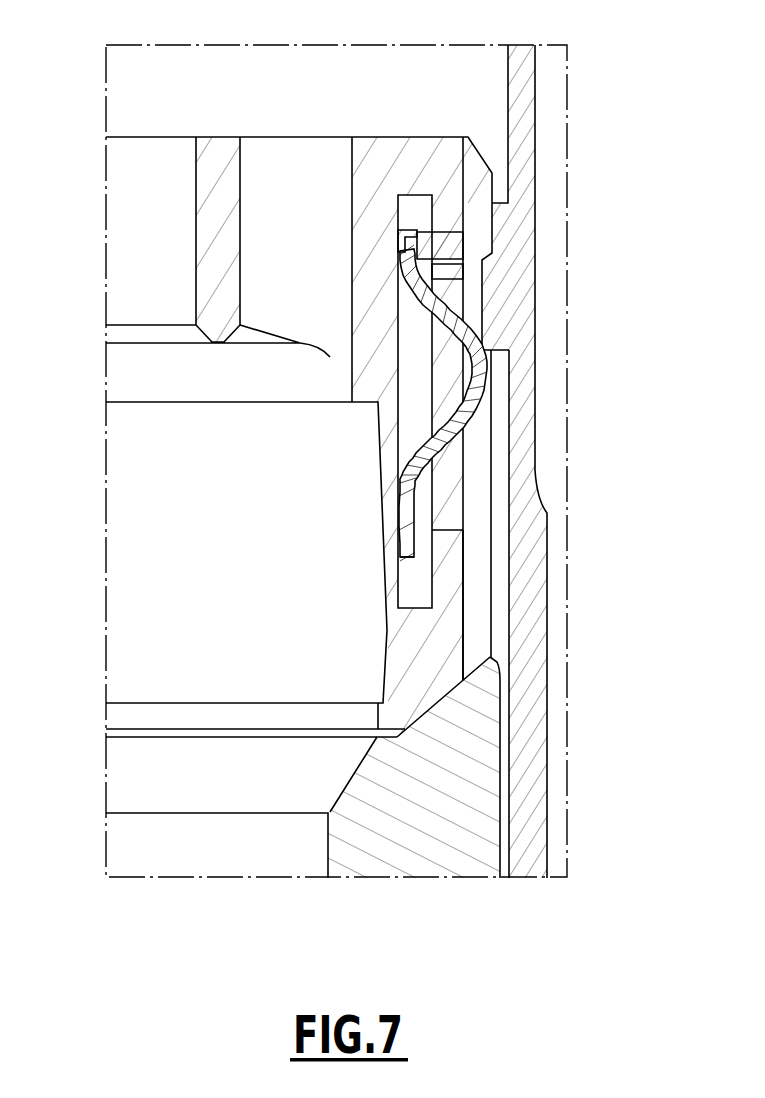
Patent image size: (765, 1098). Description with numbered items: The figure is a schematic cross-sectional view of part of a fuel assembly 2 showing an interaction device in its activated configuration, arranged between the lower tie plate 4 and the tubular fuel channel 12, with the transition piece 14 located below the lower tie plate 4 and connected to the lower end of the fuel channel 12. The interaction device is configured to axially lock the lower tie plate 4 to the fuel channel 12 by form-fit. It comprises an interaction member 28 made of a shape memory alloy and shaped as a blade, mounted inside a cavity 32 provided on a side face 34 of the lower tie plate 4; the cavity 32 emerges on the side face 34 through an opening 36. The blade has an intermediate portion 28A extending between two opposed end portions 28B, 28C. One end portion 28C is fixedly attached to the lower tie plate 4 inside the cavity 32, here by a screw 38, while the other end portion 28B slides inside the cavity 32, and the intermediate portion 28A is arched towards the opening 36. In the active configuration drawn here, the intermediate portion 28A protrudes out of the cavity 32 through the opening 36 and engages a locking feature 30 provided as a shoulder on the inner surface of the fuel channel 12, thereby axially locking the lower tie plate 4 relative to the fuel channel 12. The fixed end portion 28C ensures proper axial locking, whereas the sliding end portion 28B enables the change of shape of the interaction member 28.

The fuel assembly 2 is at (602, 63).
The lower tie plate 4 is at (155, 244).
The fuel channel 12 is at (528, 75).
The transition piece 14 is at (462, 805).
The interaction member 28 is at (510, 392).
The intermediate portion 28A is at (490, 438).
The end portion 28B is at (430, 288).
The end portion 28C is at (410, 532).
The locking feature 30 is at (493, 323).
The cavity 32 is at (410, 585).
The side face 34 is at (465, 617).
The opening 36 is at (463, 470).
The screw 38 is at (447, 245).